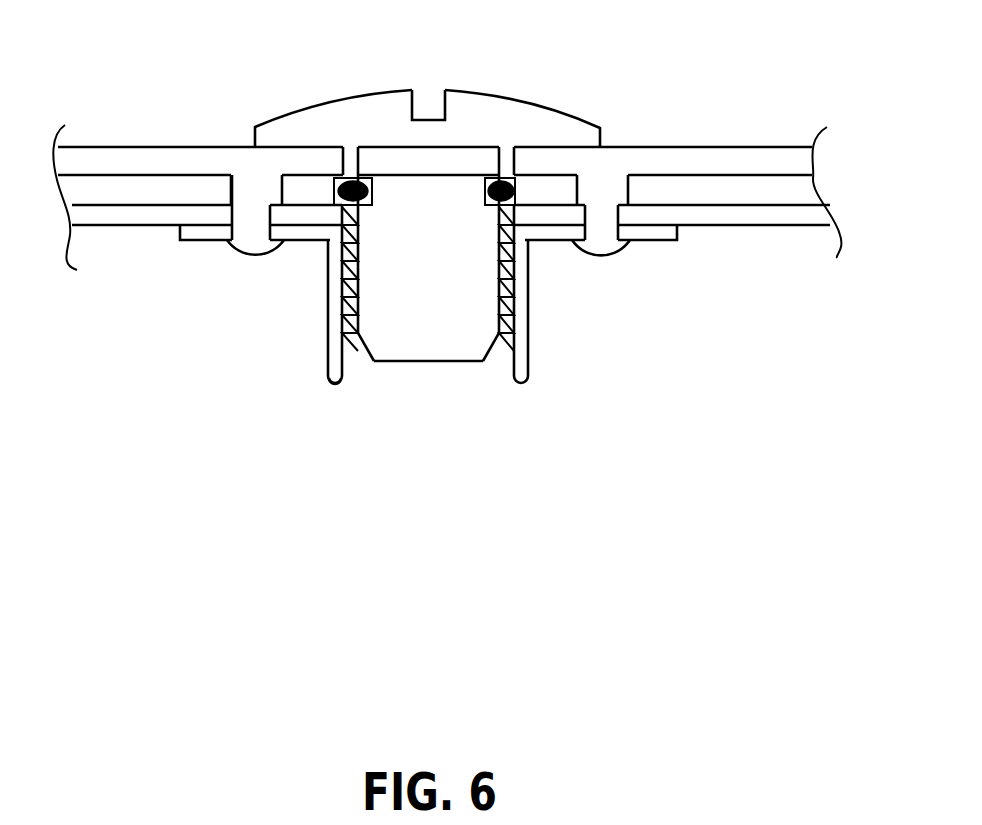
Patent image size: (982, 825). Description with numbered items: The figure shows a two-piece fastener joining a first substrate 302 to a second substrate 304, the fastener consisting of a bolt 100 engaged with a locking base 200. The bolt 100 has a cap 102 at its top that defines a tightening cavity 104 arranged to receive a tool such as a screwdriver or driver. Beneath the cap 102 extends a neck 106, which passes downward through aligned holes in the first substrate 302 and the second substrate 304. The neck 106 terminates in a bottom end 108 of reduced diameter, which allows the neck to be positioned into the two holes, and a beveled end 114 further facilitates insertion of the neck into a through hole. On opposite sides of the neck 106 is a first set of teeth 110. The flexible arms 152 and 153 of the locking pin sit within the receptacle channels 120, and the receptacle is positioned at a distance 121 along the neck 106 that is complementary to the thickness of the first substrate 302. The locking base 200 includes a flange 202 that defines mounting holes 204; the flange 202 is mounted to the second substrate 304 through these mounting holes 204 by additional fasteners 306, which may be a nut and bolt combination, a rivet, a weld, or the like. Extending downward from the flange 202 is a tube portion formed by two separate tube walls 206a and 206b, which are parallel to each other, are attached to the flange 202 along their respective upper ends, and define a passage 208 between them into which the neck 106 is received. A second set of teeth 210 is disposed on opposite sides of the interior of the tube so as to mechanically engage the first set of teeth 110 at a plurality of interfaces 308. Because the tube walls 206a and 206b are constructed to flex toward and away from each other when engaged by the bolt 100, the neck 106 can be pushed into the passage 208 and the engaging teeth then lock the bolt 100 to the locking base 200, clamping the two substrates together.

The bolt 100 is at (302, 53).
The cap 102 is at (575, 108).
The tightening cavity 104 is at (422, 97).
The neck 106 is at (475, 322).
The bottom end 108 is at (427, 365).
The first set of teeth 110 is at (345, 305).
The beveled end 114 is at (492, 338).
The receptacle channels 120 is at (485, 145).
The distance 121 is at (482, 210).
The flexible arm 152 is at (501, 178).
The flexible arm 153 is at (333, 178).
The locking base 200 is at (618, 372).
The flange 202 is at (185, 243).
The mounting holes 204 is at (608, 238).
The tube wall 206a is at (328, 340).
The tube wall 206b is at (530, 378).
The passage 208 is at (350, 372).
The second set of teeth 210 is at (345, 286).
The first substrate 302 is at (788, 157).
The second substrate 304 is at (752, 222).
The additional fasteners 306 is at (596, 238).
The interfaces 308 is at (343, 247).